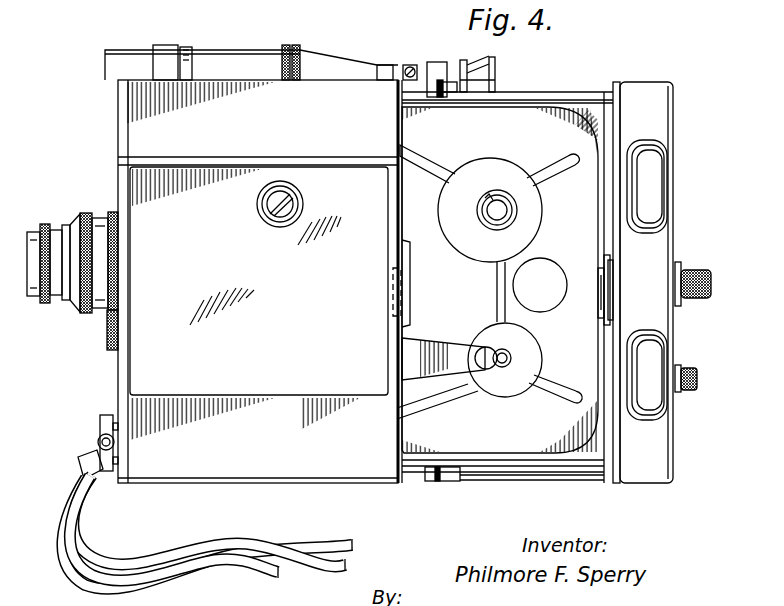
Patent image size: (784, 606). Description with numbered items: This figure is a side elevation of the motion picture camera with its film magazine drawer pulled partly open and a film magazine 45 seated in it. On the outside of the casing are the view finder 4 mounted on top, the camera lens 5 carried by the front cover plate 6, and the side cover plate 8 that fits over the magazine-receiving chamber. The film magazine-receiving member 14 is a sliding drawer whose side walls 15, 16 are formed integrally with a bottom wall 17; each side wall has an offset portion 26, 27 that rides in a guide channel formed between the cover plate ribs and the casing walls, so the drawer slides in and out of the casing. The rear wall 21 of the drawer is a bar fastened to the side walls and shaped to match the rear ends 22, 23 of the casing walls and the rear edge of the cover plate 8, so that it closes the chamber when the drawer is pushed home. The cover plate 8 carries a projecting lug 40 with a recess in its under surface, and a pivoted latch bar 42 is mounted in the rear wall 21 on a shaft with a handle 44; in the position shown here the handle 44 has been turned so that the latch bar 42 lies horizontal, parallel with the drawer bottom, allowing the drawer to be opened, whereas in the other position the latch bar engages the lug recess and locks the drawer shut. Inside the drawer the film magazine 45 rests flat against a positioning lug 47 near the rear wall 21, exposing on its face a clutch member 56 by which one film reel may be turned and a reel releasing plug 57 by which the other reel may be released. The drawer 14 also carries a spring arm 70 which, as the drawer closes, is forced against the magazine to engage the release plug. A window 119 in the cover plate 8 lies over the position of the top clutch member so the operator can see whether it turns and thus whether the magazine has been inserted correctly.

The view finder 4 is at (322, 67).
The camera lens 5 is at (76, 303).
The front cover plate 6 is at (118, 182).
The side cover plate 8 is at (352, 470).
The film magazine-receiving member 14 is at (667, 84).
The side wall 15 is at (583, 102).
The side wall 16 is at (585, 474).
The bottom wall 17 is at (604, 435).
The rear wall 21 is at (660, 115).
The rear end of casing wall 22 is at (434, 80).
The rear end of casing wall 23 is at (435, 482).
The offset portion 26 is at (559, 96).
The offset portion 27 is at (532, 474).
The projecting lug 40 is at (406, 258).
The pivoted latch bar 42 is at (602, 310).
The handle 44 is at (684, 297).
The film magazine 45 is at (524, 118).
The positioning lug 47 is at (603, 270).
The clutch member 56 is at (490, 196).
The reel releasing plug 57 is at (505, 367).
The spring arm 70 is at (442, 367).
The window 119 is at (275, 214).